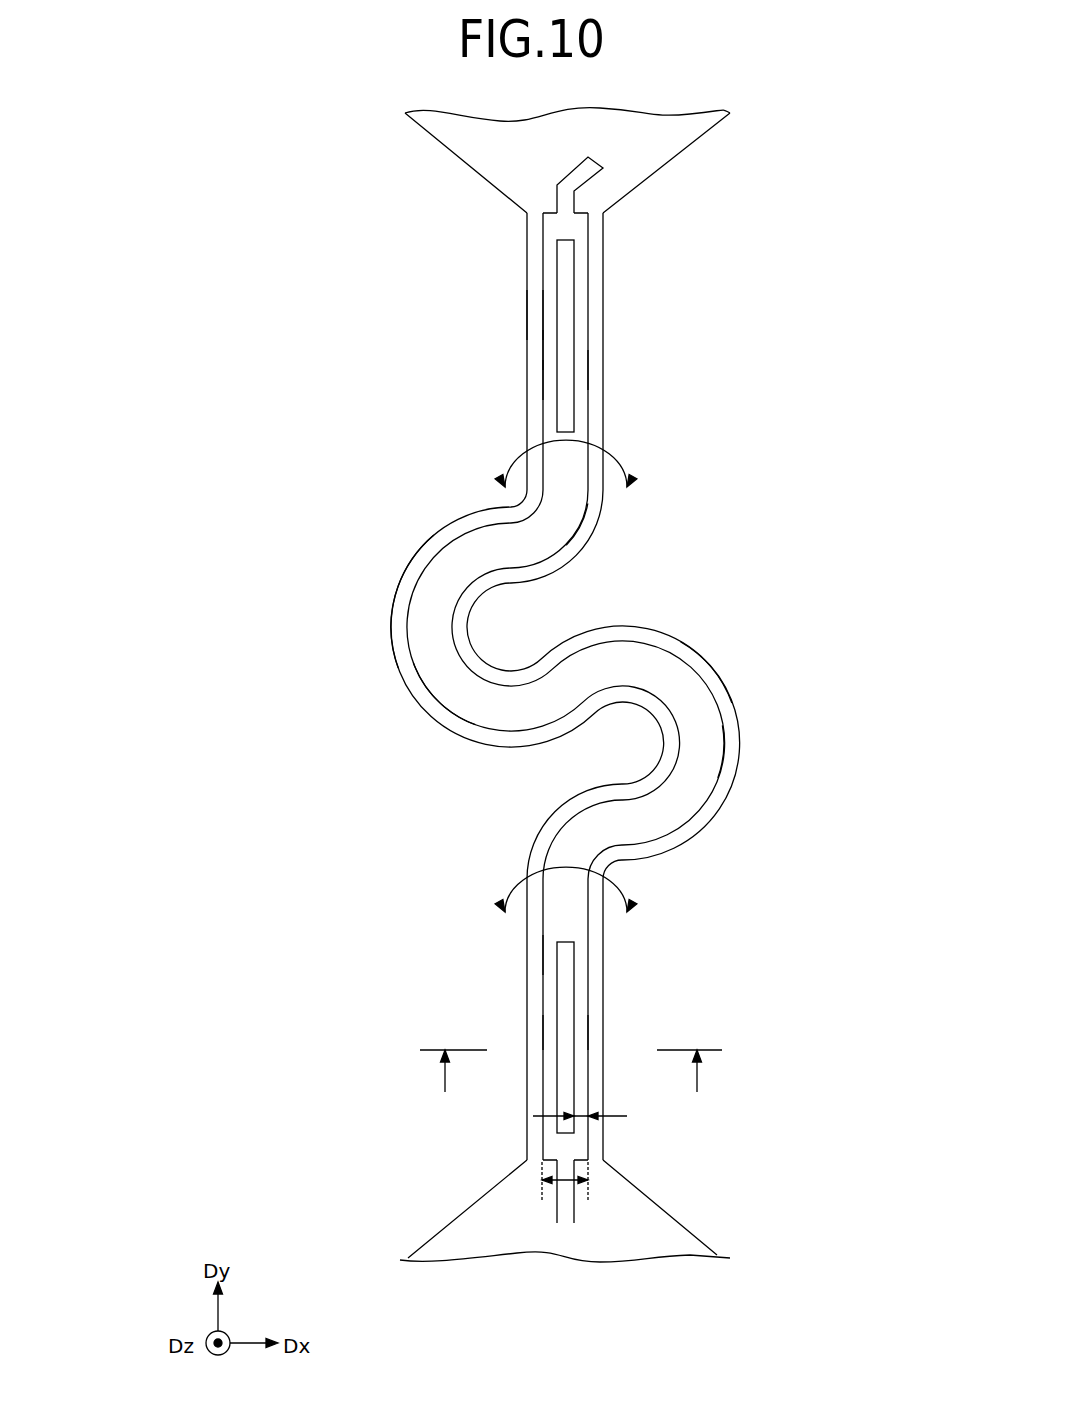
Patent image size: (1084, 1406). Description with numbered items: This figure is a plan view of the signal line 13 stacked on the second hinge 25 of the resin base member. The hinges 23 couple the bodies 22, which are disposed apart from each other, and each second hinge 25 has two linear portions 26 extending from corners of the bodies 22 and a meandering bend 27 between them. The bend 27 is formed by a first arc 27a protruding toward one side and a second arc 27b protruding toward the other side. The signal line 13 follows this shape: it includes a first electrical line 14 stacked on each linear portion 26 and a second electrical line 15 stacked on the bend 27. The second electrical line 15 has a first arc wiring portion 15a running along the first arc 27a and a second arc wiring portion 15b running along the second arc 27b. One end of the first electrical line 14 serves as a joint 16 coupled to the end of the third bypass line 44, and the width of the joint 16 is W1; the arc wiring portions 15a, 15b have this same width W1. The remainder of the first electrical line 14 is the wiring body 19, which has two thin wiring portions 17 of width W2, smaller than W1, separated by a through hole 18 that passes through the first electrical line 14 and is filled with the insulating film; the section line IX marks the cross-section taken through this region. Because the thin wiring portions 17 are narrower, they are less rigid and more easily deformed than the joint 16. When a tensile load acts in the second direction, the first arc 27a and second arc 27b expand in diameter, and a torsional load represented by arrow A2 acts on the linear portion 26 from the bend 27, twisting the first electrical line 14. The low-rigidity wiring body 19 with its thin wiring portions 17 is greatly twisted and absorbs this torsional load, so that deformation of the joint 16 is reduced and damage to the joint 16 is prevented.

The signal line 13 is at (586, 532).
The first electrical line 14 is at (534, 348).
The second electrical line 15 is at (400, 675).
The first arc wiring portion 15a is at (440, 682).
The second arc wiring portion 15b is at (713, 755).
The joint 16 is at (568, 225).
The thin wiring portion 17 is at (582, 372).
The through hole 18 is at (570, 333).
The wiring body 19 is at (540, 313).
The body 22 is at (679, 135).
The hinge 23 is at (558, 690).
The second hinge 25 is at (736, 392).
The linear portion 26 is at (527, 257).
The bend 27 is at (383, 627).
The first arc 27a is at (400, 593).
The second arc 27b is at (730, 698).
The third bypass line 44 is at (572, 168).
The arrow A2 is at (633, 443).
The section line IX is at (570, 1071).
The width W1 is at (565, 1190).
The width W2 is at (581, 1113).